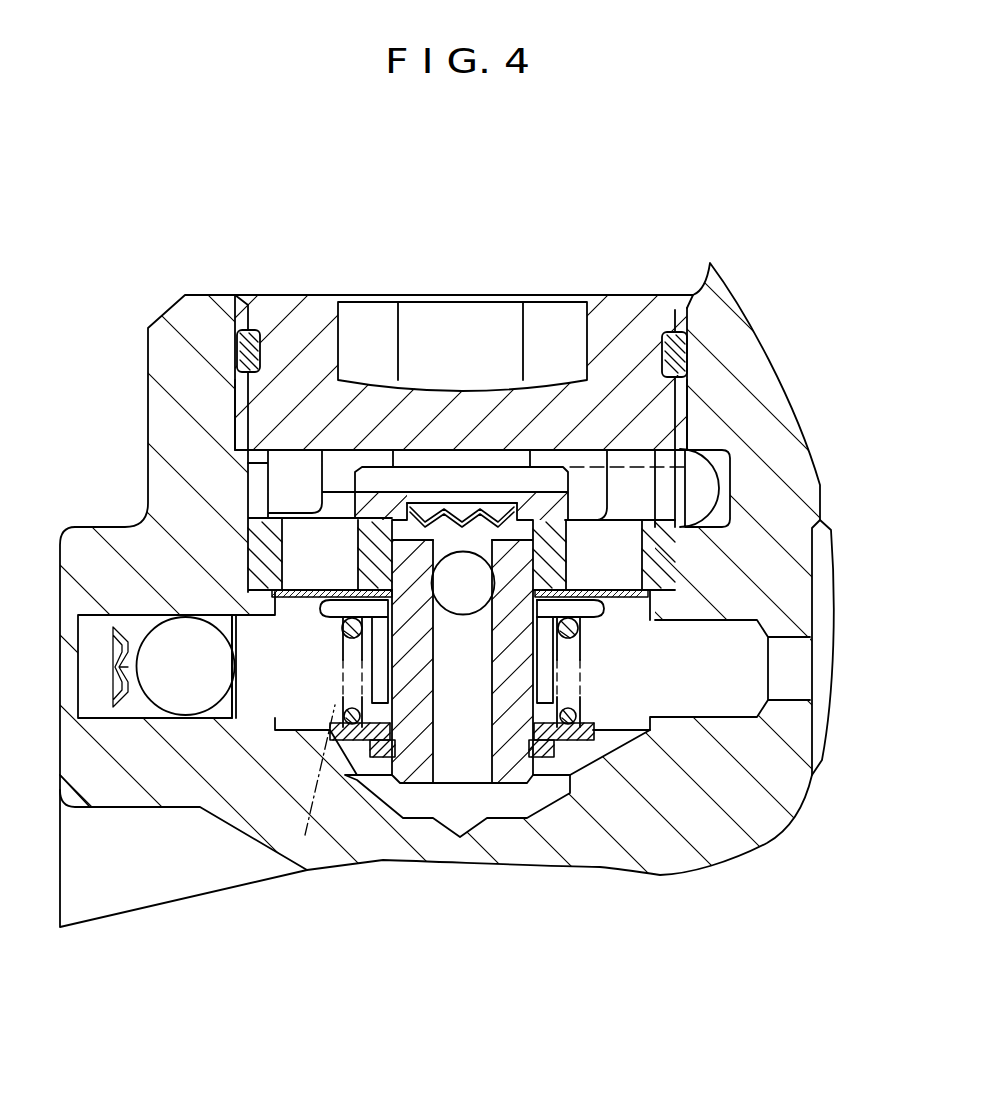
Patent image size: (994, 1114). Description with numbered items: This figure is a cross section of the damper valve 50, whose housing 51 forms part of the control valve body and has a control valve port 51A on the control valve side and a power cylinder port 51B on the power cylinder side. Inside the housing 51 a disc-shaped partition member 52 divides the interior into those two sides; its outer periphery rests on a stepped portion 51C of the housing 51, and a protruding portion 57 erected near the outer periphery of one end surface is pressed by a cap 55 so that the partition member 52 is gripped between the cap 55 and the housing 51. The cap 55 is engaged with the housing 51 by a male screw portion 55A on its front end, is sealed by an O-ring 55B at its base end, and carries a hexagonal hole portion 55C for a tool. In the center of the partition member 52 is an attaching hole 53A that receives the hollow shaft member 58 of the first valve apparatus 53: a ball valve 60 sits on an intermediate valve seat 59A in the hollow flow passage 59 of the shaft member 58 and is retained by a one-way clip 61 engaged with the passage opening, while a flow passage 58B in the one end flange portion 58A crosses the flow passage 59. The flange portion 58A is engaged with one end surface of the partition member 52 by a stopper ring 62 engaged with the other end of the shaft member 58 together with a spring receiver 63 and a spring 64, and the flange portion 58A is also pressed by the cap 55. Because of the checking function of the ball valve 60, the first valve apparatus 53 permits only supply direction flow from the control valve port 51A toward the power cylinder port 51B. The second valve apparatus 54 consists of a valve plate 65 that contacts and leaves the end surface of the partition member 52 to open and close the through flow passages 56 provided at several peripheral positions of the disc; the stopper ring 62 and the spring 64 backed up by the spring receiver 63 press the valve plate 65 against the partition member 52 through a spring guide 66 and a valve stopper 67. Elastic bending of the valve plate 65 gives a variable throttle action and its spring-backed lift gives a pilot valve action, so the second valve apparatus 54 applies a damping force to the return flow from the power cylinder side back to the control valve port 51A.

The damper valve 50 is at (319, 222).
The housing 51 is at (160, 340).
The control valve port 51A is at (803, 683).
The power cylinder port 51B is at (708, 475).
The stepped portion 51C is at (262, 575).
The partition member 52 is at (245, 537).
The first valve apparatus 53 is at (268, 462).
The attaching hole 53A is at (583, 612).
The second valve apparatus 54 is at (317, 650).
The cap 55 is at (272, 308).
The male screw portion 55A is at (692, 400).
The O-ring 55B is at (692, 353).
The hexagonal hole portion 55C is at (565, 335).
The through flow passage 56 is at (292, 558).
The protruding portion 57 is at (245, 407).
The hollow shaft member 58 is at (417, 773).
The flange portion 58A is at (432, 567).
The flow passage 58B is at (383, 473).
The hollow flow passage 59 is at (482, 748).
The intermediate valve seat 59A is at (467, 613).
The ball valve 60 is at (450, 515).
The one-way clip 61 is at (485, 505).
The stopper ring 62 is at (378, 745).
The spring receiver 63 is at (348, 718).
The spring 64 is at (335, 727).
The valve plate 65 is at (655, 602).
The spring guide 66 is at (640, 647).
The valve stopper 67 is at (650, 613).